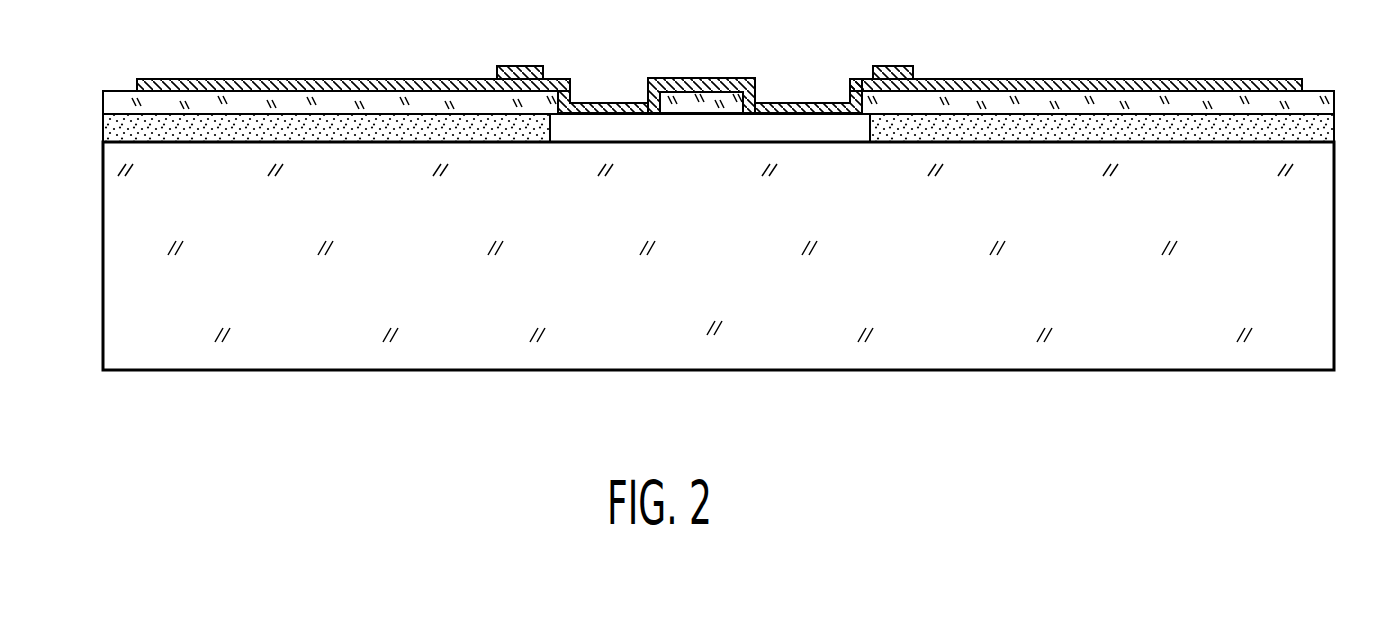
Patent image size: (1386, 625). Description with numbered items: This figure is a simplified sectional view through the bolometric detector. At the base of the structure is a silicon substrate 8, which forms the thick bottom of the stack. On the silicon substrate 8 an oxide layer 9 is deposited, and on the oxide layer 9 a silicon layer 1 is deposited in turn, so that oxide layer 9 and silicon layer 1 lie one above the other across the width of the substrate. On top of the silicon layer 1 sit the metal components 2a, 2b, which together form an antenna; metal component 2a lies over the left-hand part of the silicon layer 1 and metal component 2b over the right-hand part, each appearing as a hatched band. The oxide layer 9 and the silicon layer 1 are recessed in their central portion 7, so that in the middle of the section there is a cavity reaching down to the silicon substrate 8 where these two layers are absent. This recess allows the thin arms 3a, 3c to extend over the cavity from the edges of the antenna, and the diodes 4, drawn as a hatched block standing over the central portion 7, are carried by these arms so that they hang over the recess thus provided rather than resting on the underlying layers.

The silicon layer 1 is at (118, 100).
The metal component 2a is at (278, 86).
The metal component 2b is at (1072, 84).
The arm 3a is at (597, 102).
The second thin-film layer portion 3c is at (803, 102).
The diode 4 is at (690, 92).
The central portion 7 is at (857, 127).
The silicon substrate 8 is at (118, 270).
The oxide layer 9 is at (118, 127).